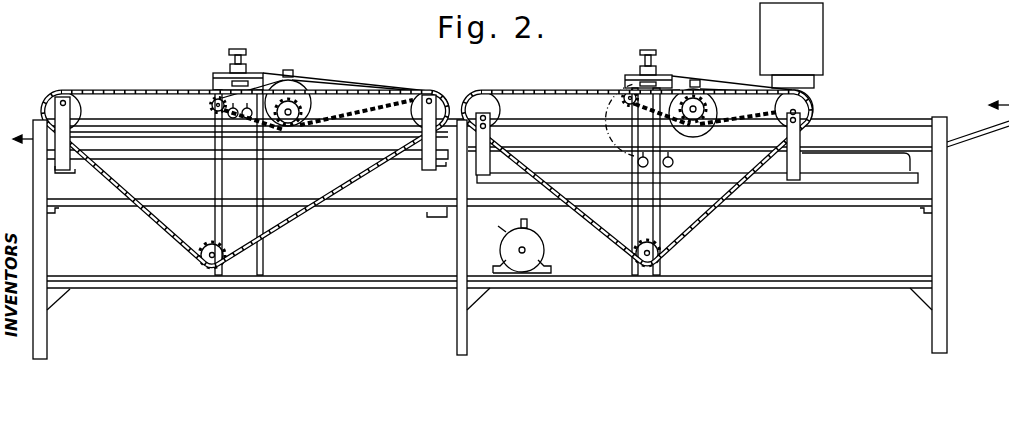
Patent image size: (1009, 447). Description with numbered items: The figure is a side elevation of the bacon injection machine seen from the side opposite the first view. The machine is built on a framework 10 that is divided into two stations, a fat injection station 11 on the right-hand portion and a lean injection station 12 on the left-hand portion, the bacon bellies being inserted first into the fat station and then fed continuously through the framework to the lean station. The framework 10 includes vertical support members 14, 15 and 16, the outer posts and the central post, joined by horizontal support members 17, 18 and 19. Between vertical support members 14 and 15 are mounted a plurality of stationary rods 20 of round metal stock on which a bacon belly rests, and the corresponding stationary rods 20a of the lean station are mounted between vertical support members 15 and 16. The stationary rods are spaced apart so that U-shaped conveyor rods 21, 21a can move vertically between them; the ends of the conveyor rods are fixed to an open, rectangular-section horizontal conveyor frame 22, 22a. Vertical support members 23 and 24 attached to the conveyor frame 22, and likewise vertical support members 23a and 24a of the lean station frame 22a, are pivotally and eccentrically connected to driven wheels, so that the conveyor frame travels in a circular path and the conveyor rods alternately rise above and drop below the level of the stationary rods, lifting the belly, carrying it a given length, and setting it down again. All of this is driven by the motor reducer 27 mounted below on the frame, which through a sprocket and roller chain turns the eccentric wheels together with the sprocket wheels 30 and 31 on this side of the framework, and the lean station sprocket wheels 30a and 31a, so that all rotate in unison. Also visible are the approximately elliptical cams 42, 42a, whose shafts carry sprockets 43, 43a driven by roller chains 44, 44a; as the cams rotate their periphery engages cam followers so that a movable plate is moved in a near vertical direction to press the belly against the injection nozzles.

The framework 10 is at (947, 225).
The fat injection station 11 is at (727, 258).
The lean injection station 12 is at (153, 263).
The vertical support member 14 is at (932, 311).
The vertical support member 15 is at (468, 335).
The vertical support member 16 is at (47, 332).
The horizontal support member 17 is at (337, 282).
The horizontal support member 18 is at (805, 206).
The horizontal support member 19 is at (352, 199).
The stationary rods 20 is at (908, 147).
The stationary rods 20a is at (92, 133).
The conveyor rods 21 is at (872, 153).
The conveyor rods 21a is at (129, 137).
The conveyor frame 22 is at (774, 173).
The conveyor frame 22a is at (283, 160).
The vertical support member 23 is at (800, 137).
The vertical support member 23a is at (55, 122).
The vertical support member 24 is at (490, 143).
The vertical support member 24a is at (423, 141).
The motor reducer 27 is at (525, 263).
The sprocket wheel 30 is at (487, 100).
The sprocket wheel 30a is at (440, 108).
The sprocket wheel 31 is at (806, 103).
The sprocket wheel 31a is at (71, 104).
The cam 42 is at (716, 134).
The cam 42a is at (276, 80).
The sprocket 43 is at (698, 108).
The sprocket 43a is at (291, 110).
The roller chain 44 is at (590, 230).
The roller chain 44a is at (284, 227).